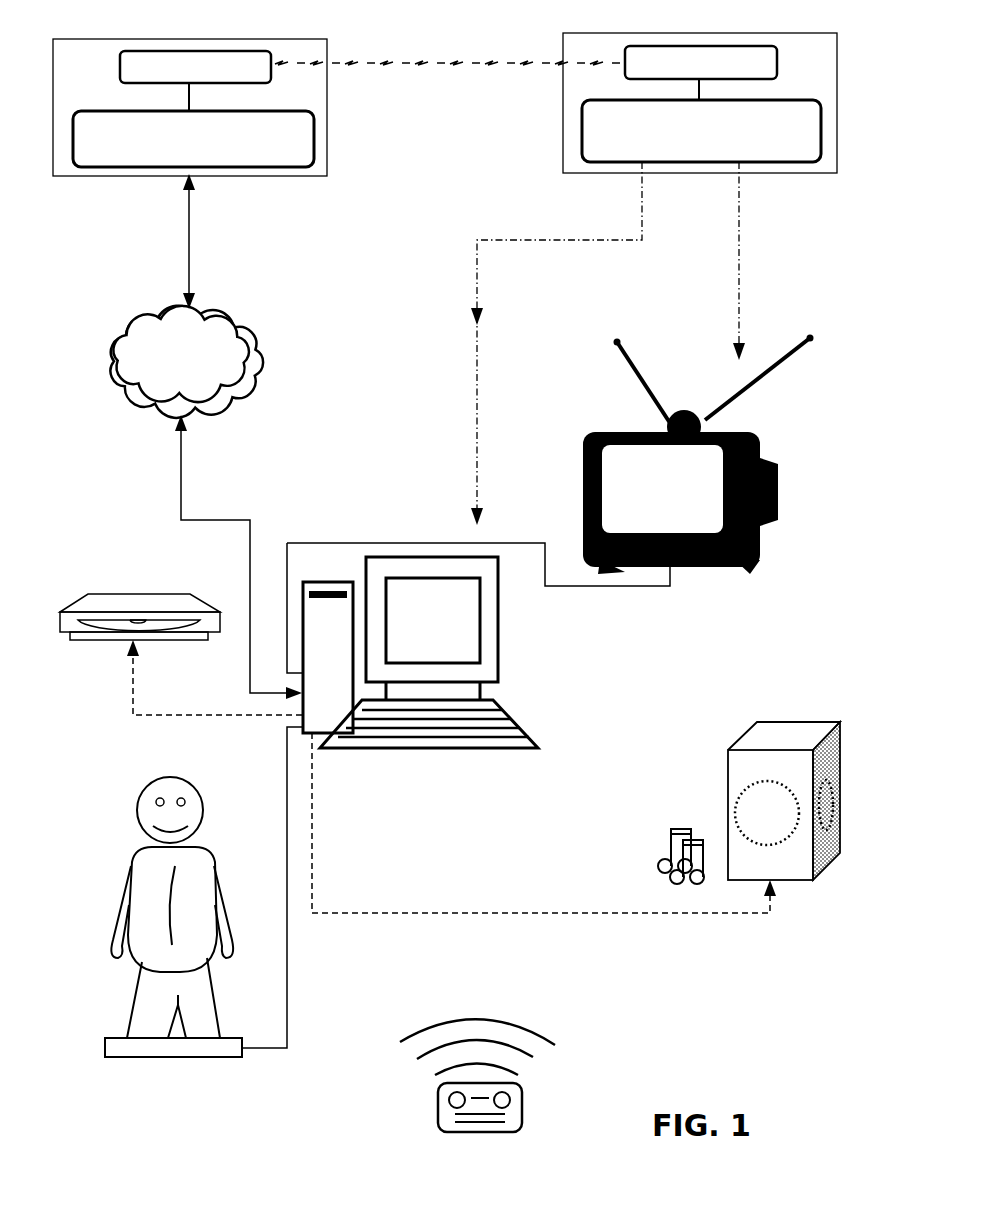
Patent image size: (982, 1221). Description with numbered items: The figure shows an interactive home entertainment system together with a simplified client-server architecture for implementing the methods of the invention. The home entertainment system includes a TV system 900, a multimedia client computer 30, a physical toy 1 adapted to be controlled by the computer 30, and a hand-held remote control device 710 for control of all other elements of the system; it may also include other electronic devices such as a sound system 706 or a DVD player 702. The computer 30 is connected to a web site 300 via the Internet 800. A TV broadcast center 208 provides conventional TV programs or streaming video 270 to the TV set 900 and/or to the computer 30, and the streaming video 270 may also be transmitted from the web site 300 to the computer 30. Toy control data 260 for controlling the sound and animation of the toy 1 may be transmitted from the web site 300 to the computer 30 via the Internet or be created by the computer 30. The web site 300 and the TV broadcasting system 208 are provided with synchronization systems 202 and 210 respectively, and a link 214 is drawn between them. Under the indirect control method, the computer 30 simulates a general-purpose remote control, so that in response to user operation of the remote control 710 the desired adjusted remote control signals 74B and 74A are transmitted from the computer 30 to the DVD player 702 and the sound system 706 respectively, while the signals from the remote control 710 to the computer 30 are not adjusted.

The physical toy 1 is at (95, 876).
The multimedia client computer 30 is at (533, 657).
The remote control signals to sound system 74A is at (544, 823).
The remote control signals to DVD player 74B is at (160, 715).
The synchronization system 202 is at (272, 55).
The TV broadcast center 208 is at (776, 162).
The synchronization system 210 is at (625, 55).
The synchronization link 214 is at (433, 66).
The toy control data 260 is at (183, 300).
The streaming video 270 is at (480, 322).
The web site 300 is at (314, 133).
The DVD player 702 is at (60, 620).
The sound system 706 is at (796, 730).
The hand-held remote control device 710 is at (550, 1074).
The Internet 800 is at (255, 345).
The TV system 900 is at (760, 575).